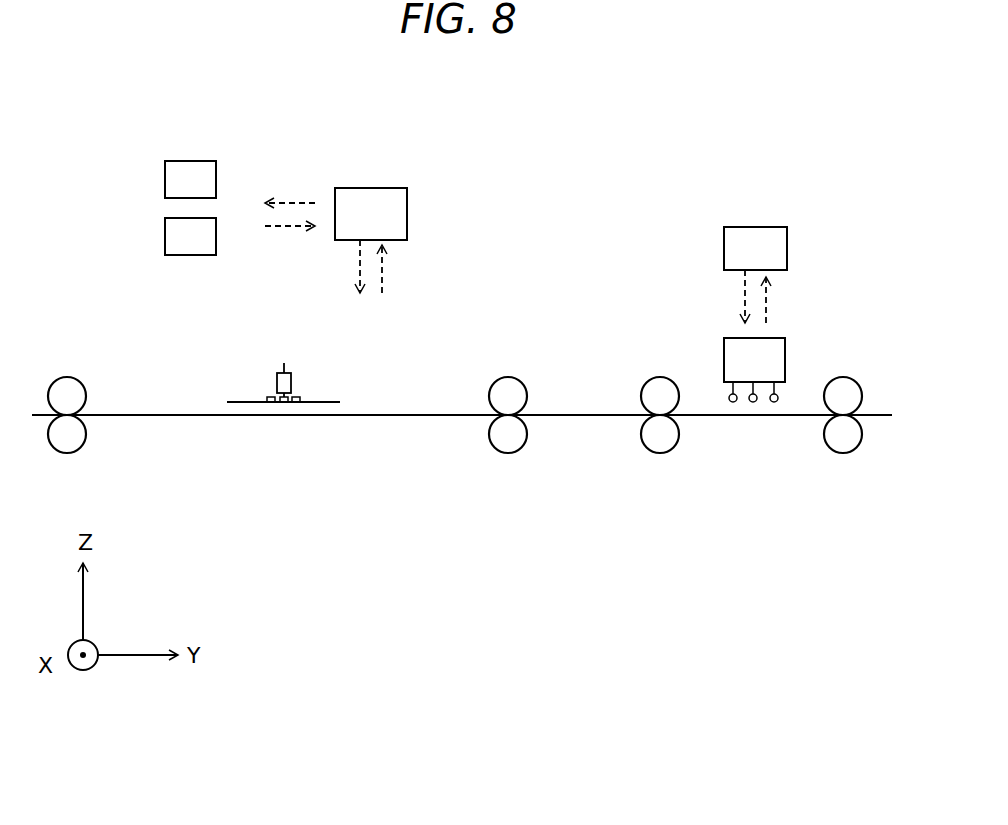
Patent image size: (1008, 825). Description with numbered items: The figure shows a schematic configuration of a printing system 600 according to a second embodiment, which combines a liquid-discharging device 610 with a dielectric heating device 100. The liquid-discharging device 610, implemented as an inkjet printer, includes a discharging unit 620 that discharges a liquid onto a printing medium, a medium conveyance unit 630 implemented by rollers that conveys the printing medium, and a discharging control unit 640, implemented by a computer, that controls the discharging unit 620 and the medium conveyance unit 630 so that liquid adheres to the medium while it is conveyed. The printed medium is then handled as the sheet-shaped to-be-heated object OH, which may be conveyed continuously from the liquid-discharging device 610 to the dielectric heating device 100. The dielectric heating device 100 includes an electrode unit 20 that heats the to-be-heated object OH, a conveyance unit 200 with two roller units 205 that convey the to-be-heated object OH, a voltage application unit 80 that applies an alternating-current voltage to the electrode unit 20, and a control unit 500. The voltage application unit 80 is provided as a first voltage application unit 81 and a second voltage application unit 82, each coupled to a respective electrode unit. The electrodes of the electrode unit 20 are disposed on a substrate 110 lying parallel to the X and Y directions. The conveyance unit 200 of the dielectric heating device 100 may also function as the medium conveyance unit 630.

The voltage application unit 80 is at (139, 208).
The first voltage application unit 81 is at (165, 181).
The second voltage application unit 82 is at (165, 238).
The control unit 500 is at (407, 218).
The dielectric heating device 100 is at (503, 226).
The substrate 110 is at (265, 400).
The electrode unit 20 is at (305, 383).
The roller units 205 is at (63, 382).
The conveyance unit 200 is at (527, 370).
The to-be-heated object OH is at (532, 417).
The printing system 600 is at (813, 169).
The liquid-discharging device 610 is at (809, 227).
The discharging control unit 640 is at (787, 245).
The discharging unit 620 is at (777, 355).
The medium conveyance unit 630 is at (663, 440).